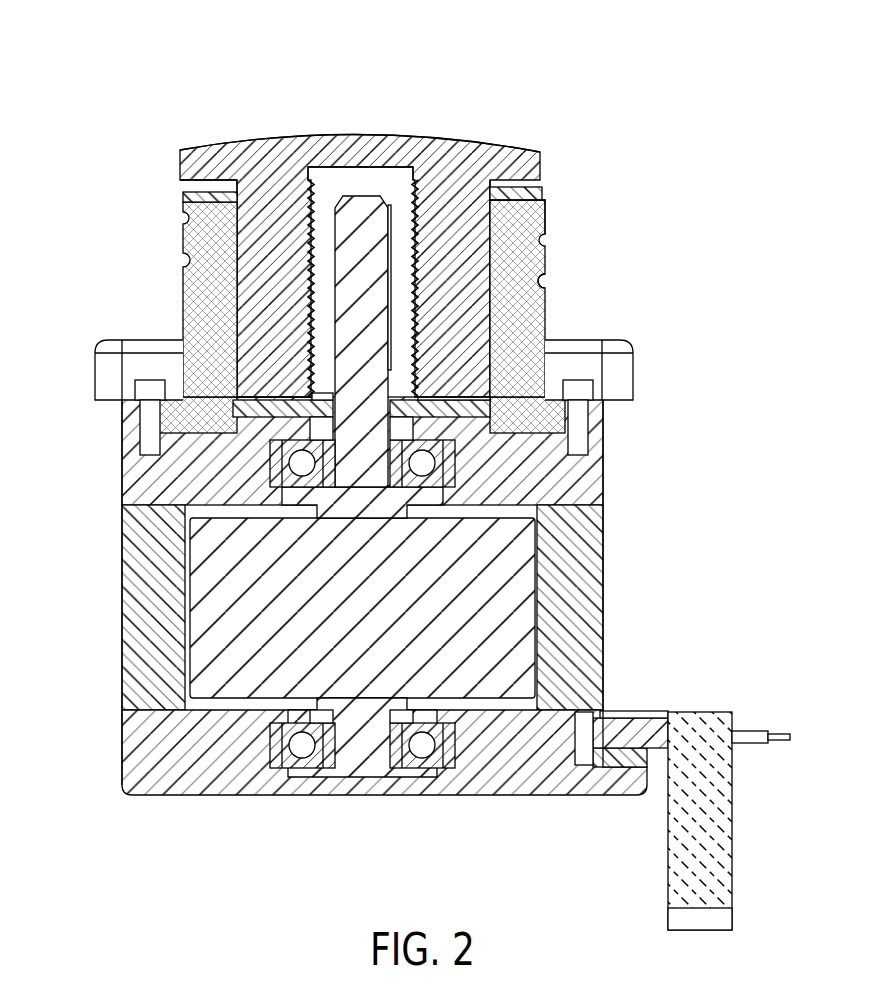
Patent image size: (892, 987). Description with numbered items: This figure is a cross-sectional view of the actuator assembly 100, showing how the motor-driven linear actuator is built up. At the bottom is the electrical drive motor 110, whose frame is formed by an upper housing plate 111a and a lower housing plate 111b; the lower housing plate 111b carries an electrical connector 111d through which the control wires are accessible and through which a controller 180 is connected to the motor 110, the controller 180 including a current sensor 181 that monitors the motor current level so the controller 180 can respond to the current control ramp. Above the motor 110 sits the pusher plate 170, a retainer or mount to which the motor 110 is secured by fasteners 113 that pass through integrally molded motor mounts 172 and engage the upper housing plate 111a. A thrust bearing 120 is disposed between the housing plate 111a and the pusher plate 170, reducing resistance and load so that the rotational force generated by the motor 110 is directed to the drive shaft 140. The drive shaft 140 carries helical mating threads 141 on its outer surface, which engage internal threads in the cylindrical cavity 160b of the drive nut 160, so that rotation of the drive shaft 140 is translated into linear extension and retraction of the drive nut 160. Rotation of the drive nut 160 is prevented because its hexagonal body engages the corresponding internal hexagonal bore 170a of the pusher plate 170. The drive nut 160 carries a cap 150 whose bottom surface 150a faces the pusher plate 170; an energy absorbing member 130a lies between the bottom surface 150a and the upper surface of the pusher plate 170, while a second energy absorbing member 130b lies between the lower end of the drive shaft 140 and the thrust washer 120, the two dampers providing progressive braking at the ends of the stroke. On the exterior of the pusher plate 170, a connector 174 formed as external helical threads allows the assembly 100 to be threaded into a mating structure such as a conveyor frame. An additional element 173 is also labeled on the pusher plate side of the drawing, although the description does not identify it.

The actuator assembly 100 is at (120, 79).
The electrical drive motor 110 is at (378, 541).
The upper housing plate 111a is at (140, 478).
The lower housing plate 111b is at (140, 762).
The electrical connector 111d is at (632, 738).
The fasteners 113 is at (140, 425).
The thrust bearing 120 is at (490, 405).
The energy absorbing member 130a is at (545, 192).
The energy absorbing member 130b is at (245, 405).
The drive shaft 140 is at (403, 251).
The mating threads 141 is at (308, 330).
The cap 150 is at (358, 238).
The bottom surface of cap 150a is at (192, 180).
The drive nut 160 is at (265, 195).
The cylindrical cavity 160b is at (350, 180).
The pusher plate 170 is at (555, 245).
The internal hexagonal bore 170a is at (490, 223).
The motor mounts 172 is at (636, 378).
The insulating sleeve 173 is at (210, 203).
The connector 174 is at (545, 287).
The controller 180 is at (692, 826).
The current sensor 181 is at (735, 918).